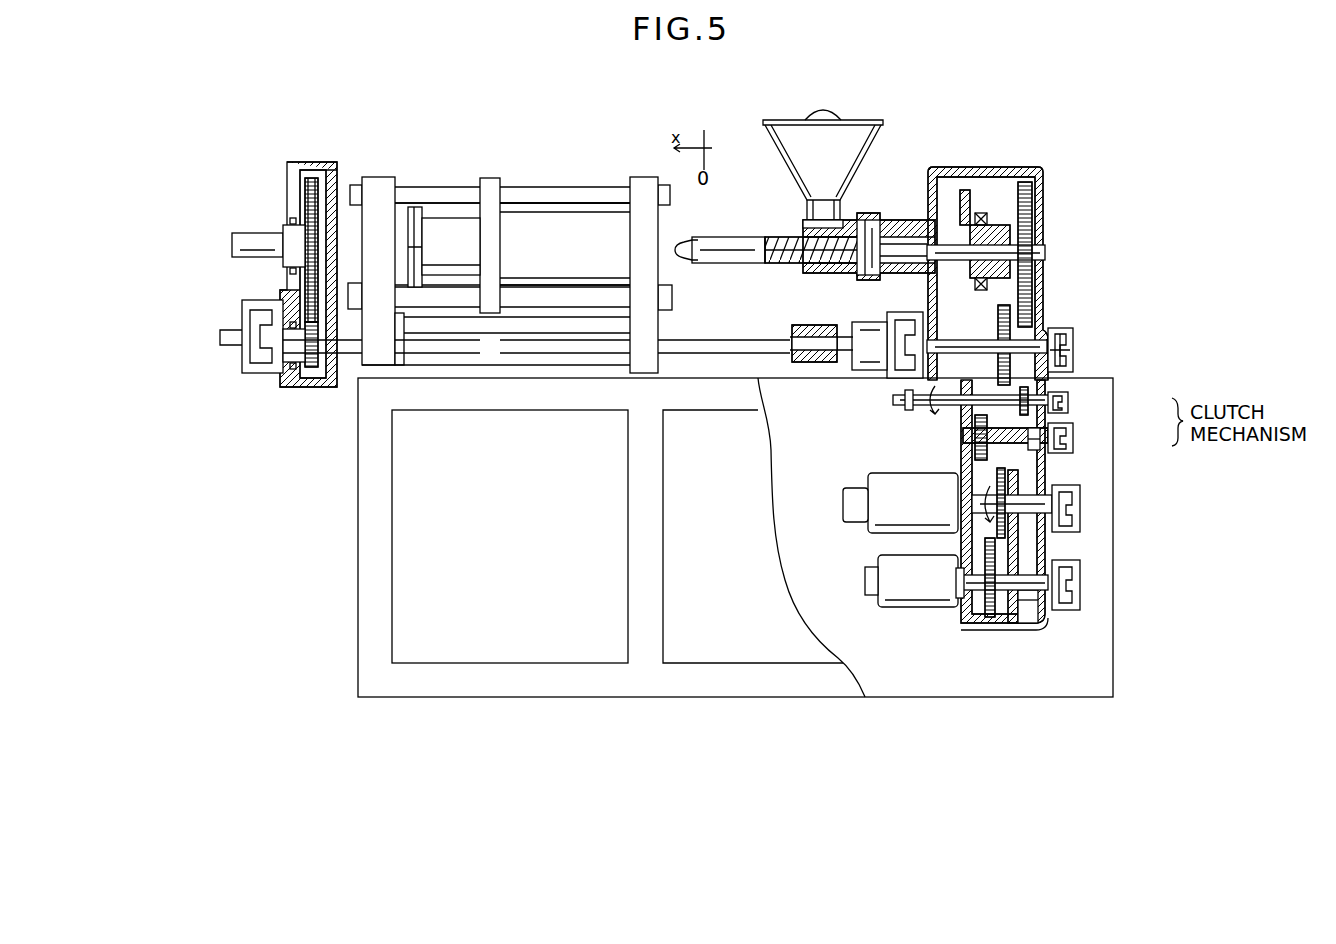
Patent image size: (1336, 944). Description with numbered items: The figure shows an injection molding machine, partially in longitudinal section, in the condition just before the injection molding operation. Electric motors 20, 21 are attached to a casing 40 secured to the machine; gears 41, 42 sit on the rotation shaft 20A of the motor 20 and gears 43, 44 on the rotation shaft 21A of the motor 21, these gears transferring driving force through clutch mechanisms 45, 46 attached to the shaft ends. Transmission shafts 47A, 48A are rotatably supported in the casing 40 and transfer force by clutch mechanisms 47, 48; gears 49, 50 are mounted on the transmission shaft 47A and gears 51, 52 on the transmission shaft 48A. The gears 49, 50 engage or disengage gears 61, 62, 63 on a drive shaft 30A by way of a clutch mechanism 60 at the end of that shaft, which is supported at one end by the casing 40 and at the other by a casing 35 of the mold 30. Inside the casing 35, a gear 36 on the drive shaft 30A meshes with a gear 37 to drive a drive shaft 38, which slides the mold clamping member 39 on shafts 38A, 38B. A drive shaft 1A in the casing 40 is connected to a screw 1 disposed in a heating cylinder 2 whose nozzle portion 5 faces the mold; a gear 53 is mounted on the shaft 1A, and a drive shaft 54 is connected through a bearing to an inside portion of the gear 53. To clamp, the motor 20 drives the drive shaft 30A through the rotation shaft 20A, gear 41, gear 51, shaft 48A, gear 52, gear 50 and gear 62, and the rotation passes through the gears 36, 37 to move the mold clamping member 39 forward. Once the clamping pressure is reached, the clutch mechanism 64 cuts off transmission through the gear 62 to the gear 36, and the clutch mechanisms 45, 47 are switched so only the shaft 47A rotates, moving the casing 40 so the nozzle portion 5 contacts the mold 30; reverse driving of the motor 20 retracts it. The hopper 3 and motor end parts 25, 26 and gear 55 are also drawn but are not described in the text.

The screw 1 is at (768, 240).
The drive shaft 1A is at (868, 238).
The heating cylinder 2 is at (706, 240).
The hopper 3 is at (870, 155).
The nozzle portion 5 is at (683, 260).
The electric motor 20 is at (868, 522).
The rotation shaft 20A is at (975, 505).
The electric motor 21 is at (892, 607).
The rotation shaft 21A is at (964, 605).
The encoder 25 is at (865, 581).
The encoder 26 is at (843, 497).
The mold 30 is at (553, 186).
The drive shaft 30A is at (797, 363).
The casing 35 is at (293, 381).
The gear 36 is at (315, 352).
The gear 37 is at (320, 185).
The drive shaft 38 is at (243, 233).
The shaft 38A is at (544, 204).
The shaft 38B is at (544, 292).
The mold clamping member 39 is at (436, 222).
The casing 40 is at (1010, 631).
The gear 41 is at (985, 542).
The gear 42 is at (1020, 474).
The gear 43 is at (988, 605).
The gear 44 is at (1030, 614).
The clutch mechanism 45 is at (1085, 504).
The clutch mechanism 46 is at (1085, 585).
The clutch mechanism 47 is at (1070, 402).
The transmission shaft 47A is at (893, 400).
The clutch mechanism 48 is at (1075, 438).
The transmission shaft 48A is at (963, 438).
The gear 49 is at (930, 420).
The gear 50 is at (1046, 382).
The gear 51 is at (975, 453).
The gear 52 is at (1038, 448).
The gear 53 is at (980, 200).
The drive shaft 54 is at (1000, 224).
The gear 55 is at (1031, 215).
The clutch mechanism 60 is at (1075, 331).
The gear 61 is at (918, 328).
The gear 62 is at (1005, 302).
The gear 63 is at (1062, 366).
The clutch mechanism 64 is at (871, 332).